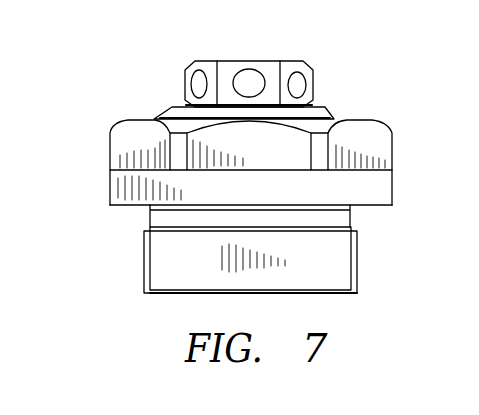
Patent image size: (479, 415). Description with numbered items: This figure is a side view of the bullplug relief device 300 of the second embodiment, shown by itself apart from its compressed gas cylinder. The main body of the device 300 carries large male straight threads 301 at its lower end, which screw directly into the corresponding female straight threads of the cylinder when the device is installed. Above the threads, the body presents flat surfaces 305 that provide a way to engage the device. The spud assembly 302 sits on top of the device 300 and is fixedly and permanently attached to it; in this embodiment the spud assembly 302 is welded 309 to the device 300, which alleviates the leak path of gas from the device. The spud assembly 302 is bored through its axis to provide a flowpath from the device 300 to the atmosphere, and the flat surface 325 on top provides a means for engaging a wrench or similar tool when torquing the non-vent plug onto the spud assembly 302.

The bullplug relief device 300 is at (85, 62).
The male straight threads 301 is at (358, 261).
The spud assembly 302 is at (267, 61).
The flat surfaces 305 is at (367, 138).
The weld 309 is at (323, 110).
The flat surface 325 is at (197, 82).